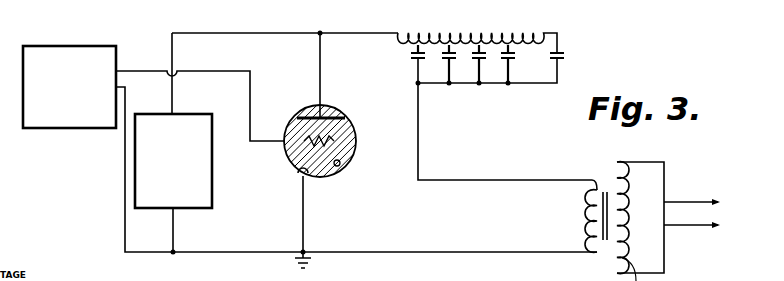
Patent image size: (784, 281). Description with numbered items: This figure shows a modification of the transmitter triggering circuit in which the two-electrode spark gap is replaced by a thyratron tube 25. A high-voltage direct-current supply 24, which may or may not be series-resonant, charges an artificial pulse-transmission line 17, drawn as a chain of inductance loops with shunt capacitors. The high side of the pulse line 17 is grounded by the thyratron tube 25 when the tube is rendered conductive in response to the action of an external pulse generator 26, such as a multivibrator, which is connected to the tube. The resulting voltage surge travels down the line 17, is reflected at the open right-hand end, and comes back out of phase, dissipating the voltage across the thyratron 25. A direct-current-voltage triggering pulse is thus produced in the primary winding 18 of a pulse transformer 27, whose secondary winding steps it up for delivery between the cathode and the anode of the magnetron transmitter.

The artificial pulse-transmission line 17 is at (447, 33).
The primary winding 18 is at (585, 237).
The high-voltage direct-current supply 24 is at (208, 193).
The thyratron tube 25 is at (357, 141).
The external pulse generator 26 is at (55, 124).
The pulse transformer 27 is at (608, 176).